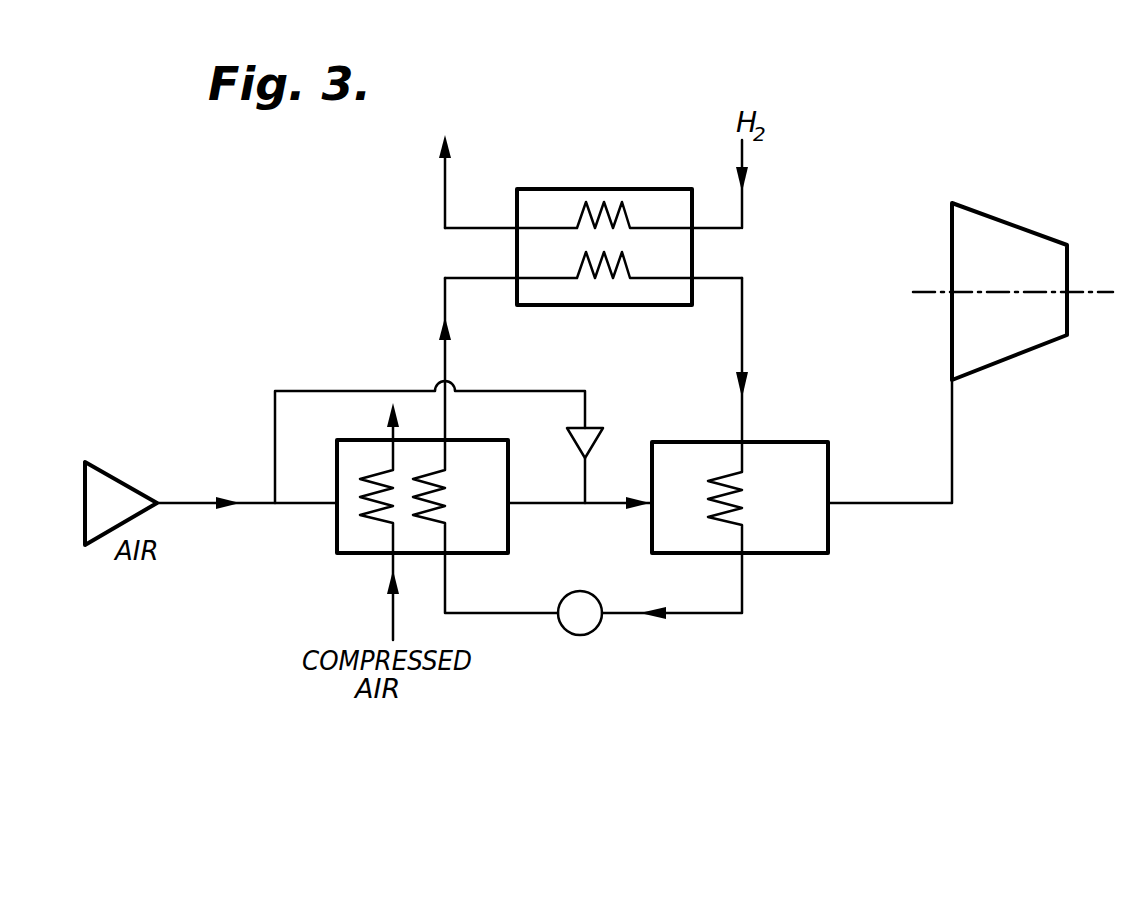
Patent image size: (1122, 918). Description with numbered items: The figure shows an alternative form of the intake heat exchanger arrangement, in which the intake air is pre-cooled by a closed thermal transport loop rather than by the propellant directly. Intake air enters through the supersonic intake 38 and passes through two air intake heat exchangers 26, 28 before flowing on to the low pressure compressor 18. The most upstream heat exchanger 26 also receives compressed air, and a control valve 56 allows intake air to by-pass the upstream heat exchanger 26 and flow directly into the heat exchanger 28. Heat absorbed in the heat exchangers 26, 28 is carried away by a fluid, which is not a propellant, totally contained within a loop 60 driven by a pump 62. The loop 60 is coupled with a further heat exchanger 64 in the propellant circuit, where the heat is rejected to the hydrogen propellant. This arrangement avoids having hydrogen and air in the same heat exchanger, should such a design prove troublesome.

The low pressure compressor 18 is at (1008, 345).
The air intake heat exchanger 26 is at (490, 532).
The air intake heat exchanger 28 is at (806, 455).
The supersonic intake 38 is at (110, 490).
The control valve 56 is at (603, 432).
The loop 60 is at (744, 312).
The pump 62 is at (583, 604).
The further heat exchanger 64 is at (653, 298).